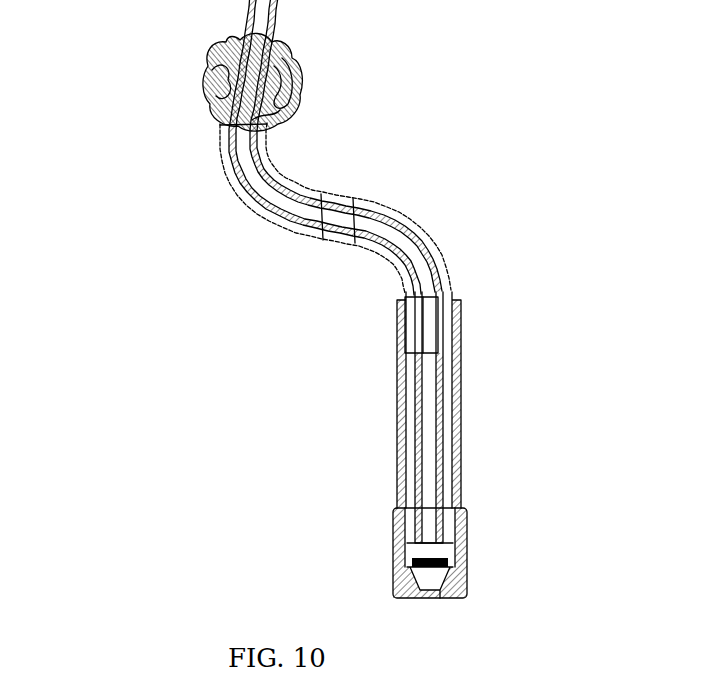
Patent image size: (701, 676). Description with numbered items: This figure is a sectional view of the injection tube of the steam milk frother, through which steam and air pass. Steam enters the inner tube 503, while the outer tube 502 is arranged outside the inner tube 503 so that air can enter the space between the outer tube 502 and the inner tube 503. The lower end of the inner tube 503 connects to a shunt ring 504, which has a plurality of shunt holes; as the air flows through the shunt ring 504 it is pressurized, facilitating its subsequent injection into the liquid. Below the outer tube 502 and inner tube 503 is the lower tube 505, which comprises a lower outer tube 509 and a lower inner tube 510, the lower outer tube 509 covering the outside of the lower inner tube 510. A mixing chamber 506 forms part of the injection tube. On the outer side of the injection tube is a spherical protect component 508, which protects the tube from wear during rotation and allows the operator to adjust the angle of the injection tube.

The outer tube 502 is at (262, 215).
The inner tube 503 is at (258, 182).
The shunt ring 504 is at (416, 333).
The lower tube 505 is at (257, 445).
The mixing chamber 506 is at (455, 580).
The protect component 508 is at (283, 105).
The lower outer tube 509 is at (400, 432).
The lower inner tube 510 is at (430, 452).